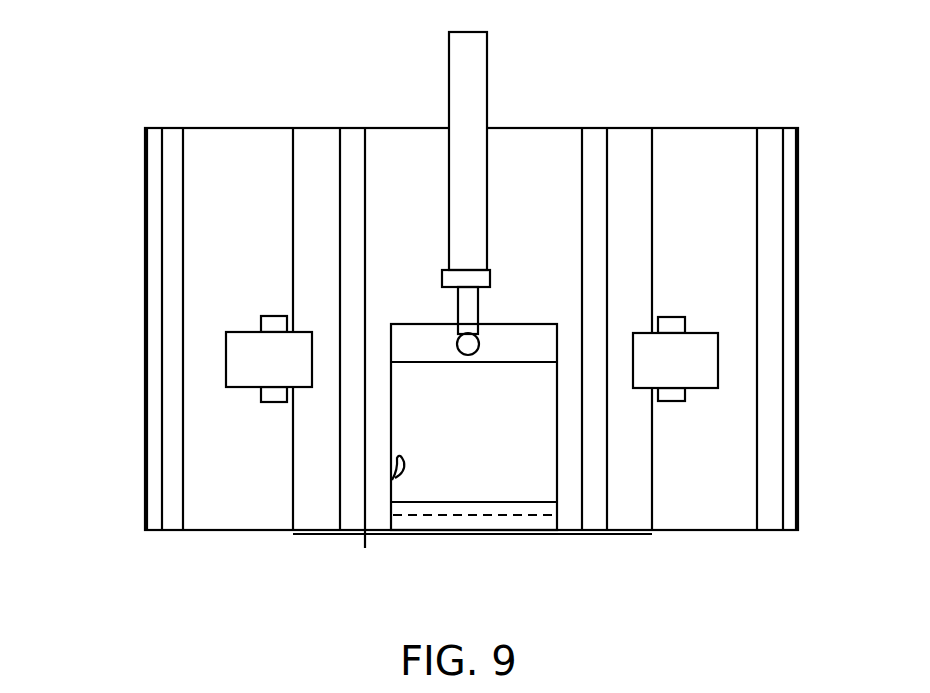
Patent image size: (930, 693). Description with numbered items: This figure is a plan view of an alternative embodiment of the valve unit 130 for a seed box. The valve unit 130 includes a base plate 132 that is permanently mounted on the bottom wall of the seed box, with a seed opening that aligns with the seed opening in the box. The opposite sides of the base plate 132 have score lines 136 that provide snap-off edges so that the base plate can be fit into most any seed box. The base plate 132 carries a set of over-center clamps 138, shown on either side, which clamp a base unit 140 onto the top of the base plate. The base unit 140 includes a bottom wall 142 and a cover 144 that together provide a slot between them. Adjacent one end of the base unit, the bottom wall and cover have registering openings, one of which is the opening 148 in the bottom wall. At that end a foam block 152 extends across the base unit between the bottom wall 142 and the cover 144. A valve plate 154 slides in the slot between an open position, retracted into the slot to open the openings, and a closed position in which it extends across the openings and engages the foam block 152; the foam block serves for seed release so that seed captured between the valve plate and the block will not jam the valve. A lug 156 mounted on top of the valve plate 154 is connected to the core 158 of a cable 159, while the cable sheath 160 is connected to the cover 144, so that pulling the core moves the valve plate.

The valve unit 130 is at (112, 138).
The base plate 132 is at (198, 411).
The score lines 136 is at (180, 508).
The over-center clamps 138 is at (245, 348).
The base unit 140 is at (358, 540).
The bottom wall 142 is at (628, 505).
The cover 144 is at (384, 508).
The opening 148 is at (392, 480).
The foam block 152 is at (498, 510).
The valve plate 154 is at (493, 332).
The lug 156 is at (478, 336).
The core 158 is at (471, 322).
The cable 159 is at (497, 64).
The cable sheath 160 is at (462, 120).